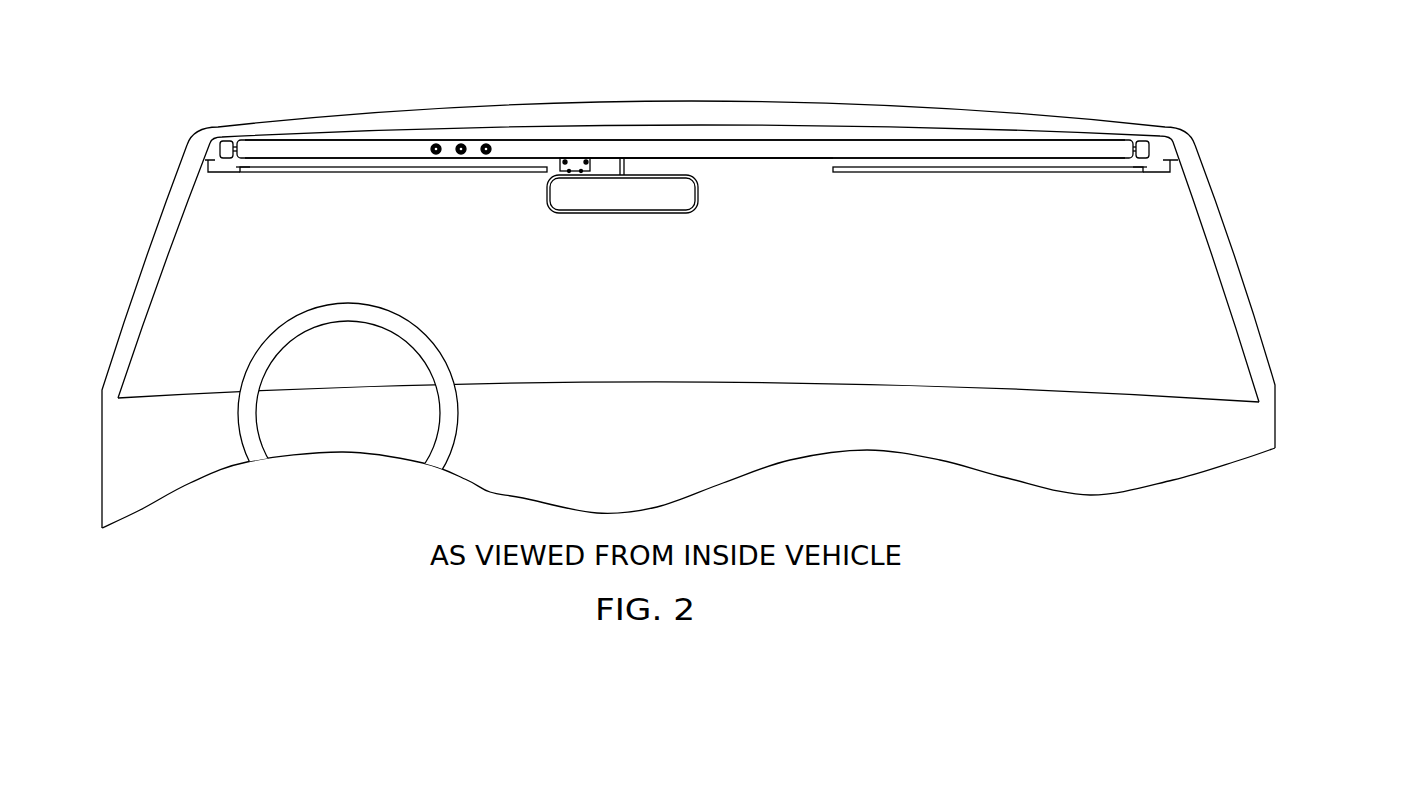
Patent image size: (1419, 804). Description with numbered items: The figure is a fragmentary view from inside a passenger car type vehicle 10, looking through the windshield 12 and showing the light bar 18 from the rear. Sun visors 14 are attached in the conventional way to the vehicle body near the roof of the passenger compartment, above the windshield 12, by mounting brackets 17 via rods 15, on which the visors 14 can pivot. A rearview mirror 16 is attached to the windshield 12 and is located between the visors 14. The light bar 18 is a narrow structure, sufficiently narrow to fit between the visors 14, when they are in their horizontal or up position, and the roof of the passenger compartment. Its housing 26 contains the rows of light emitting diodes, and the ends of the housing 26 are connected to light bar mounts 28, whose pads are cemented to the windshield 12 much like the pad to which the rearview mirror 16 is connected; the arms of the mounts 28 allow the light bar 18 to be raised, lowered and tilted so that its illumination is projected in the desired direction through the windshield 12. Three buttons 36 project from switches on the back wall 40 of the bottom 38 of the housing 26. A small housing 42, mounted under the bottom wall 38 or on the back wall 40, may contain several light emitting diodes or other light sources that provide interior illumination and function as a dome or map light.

The vehicle 10 is at (1270, 421).
The windshield 12 is at (1210, 302).
The sun visors 14 is at (393, 173).
The rods 15 is at (224, 173).
The rearview mirror 16 is at (621, 213).
The mounting brackets 17 is at (213, 162).
The light bar 18 is at (1002, 147).
The housing 26 is at (726, 147).
The light bar mounts 28 is at (225, 142).
The buttons 36 is at (462, 147).
The bottom 38 is at (797, 160).
The back wall 40 is at (849, 148).
The small housing 42 is at (577, 158).